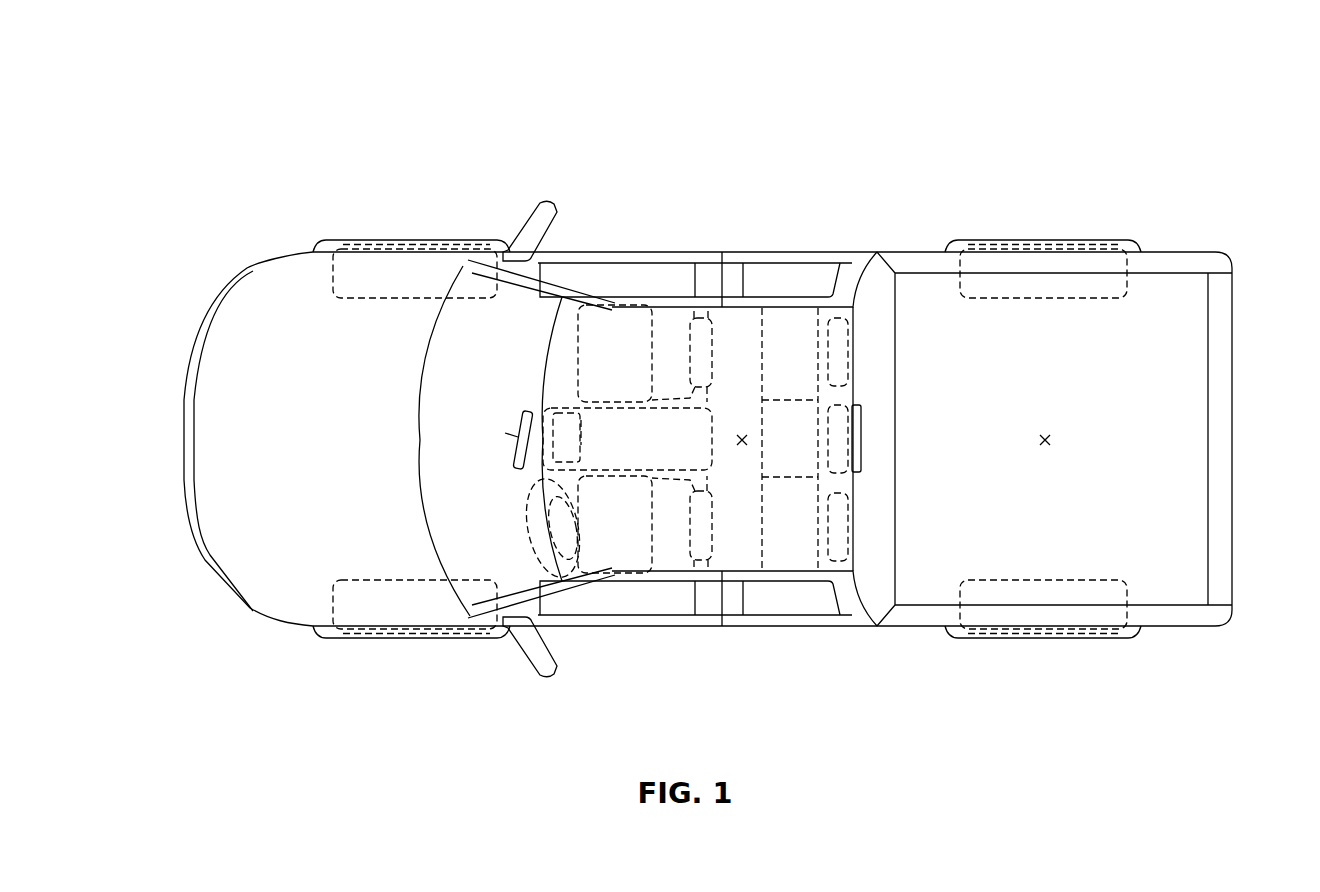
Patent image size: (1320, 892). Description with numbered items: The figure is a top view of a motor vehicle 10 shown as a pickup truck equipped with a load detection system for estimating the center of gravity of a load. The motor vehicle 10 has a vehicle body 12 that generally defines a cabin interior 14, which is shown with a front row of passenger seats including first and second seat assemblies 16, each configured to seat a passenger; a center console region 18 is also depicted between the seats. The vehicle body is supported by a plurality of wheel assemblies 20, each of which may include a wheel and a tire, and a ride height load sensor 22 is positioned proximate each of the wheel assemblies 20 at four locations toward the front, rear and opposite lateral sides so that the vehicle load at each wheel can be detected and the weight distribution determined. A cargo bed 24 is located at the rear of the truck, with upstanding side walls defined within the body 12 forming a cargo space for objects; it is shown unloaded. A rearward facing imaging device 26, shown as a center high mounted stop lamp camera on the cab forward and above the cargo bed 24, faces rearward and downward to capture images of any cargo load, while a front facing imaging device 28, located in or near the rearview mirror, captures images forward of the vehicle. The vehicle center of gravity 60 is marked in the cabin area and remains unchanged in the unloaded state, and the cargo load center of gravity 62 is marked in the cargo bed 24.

The motor vehicle 10 is at (298, 120).
The vehicle body 12 is at (1187, 250).
The cabin interior 14 is at (738, 340).
The seat assemblies 16 is at (610, 328).
The center console 18 is at (567, 438).
The wheel assemblies 20 is at (437, 246).
The ride height load sensors 22 is at (410, 304).
The cargo bed 24 is at (1167, 413).
The rearward facing imaging device 26 is at (866, 440).
The front facing imaging device 28 is at (517, 437).
The vehicle center of gravity 60 is at (755, 440).
The cargo load center of gravity 62 is at (1057, 440).